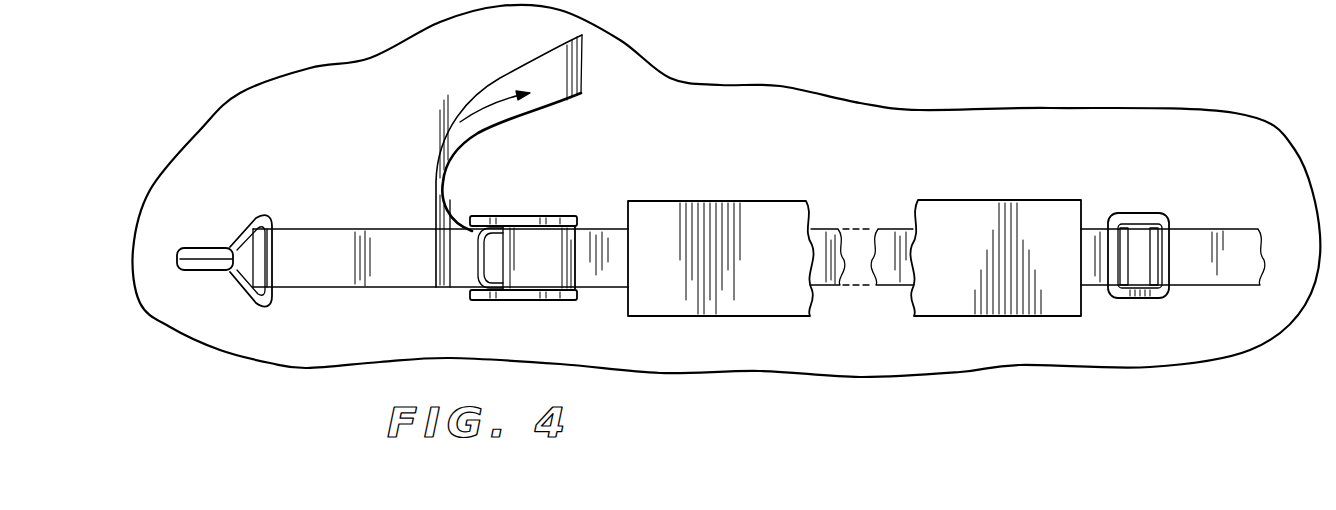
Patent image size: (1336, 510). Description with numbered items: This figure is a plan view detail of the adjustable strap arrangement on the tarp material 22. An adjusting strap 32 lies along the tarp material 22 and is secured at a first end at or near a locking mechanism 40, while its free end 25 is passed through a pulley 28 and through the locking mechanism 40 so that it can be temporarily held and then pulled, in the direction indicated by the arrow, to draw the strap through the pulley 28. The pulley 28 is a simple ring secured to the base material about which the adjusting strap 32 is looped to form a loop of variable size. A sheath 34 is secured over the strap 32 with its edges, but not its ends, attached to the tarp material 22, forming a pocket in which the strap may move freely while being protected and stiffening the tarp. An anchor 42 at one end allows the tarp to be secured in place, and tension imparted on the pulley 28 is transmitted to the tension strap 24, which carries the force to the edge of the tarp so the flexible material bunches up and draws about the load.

The tarp material 22 is at (346, 154).
The tension strap 24 is at (1238, 227).
The free end of the adjusting strap 25 is at (482, 78).
The pulley 28 is at (1137, 212).
The adjusting strap 32 is at (895, 231).
The sheath 34 is at (770, 212).
The locking mechanism 40 is at (518, 302).
The anchor 42 is at (222, 230).